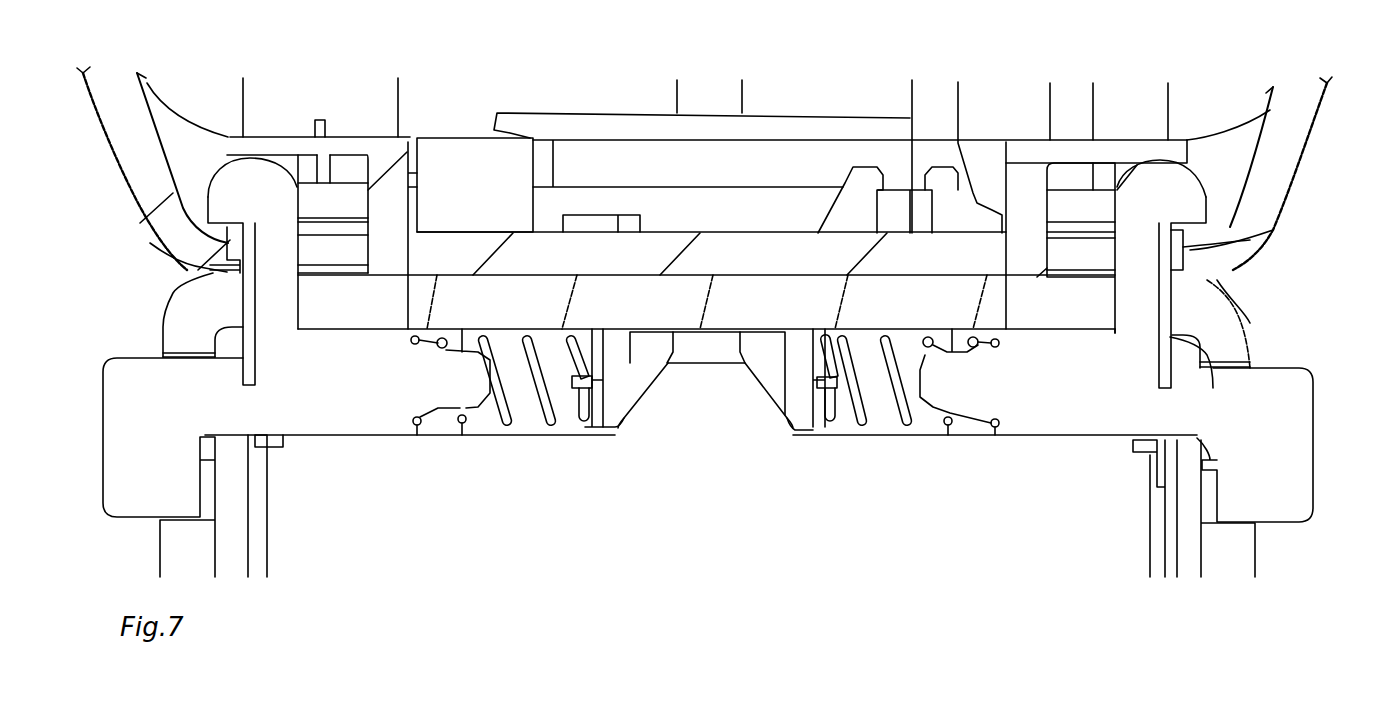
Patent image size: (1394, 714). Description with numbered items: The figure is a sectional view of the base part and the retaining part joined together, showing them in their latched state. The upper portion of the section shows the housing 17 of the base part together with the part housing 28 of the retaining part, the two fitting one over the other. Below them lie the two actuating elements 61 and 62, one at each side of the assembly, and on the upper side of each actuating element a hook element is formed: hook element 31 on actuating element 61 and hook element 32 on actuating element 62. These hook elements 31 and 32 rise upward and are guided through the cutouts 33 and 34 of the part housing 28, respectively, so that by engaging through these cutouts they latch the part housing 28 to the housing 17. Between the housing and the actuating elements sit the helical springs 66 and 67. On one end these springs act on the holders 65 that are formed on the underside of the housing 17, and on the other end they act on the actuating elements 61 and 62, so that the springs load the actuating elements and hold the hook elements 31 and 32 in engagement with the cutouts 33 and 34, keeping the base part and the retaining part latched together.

The housing 17 is at (173, 322).
The part housing 28 is at (125, 172).
The hook element 31 is at (1187, 165).
The hook element 32 is at (263, 172).
The cutout 33 is at (228, 243).
The cutout 34 is at (1275, 231).
The actuating element 61 is at (1307, 437).
The actuating element 62 is at (110, 447).
The holder 65 is at (618, 430).
The helical spring 66 is at (862, 426).
The helical spring 67 is at (507, 424).